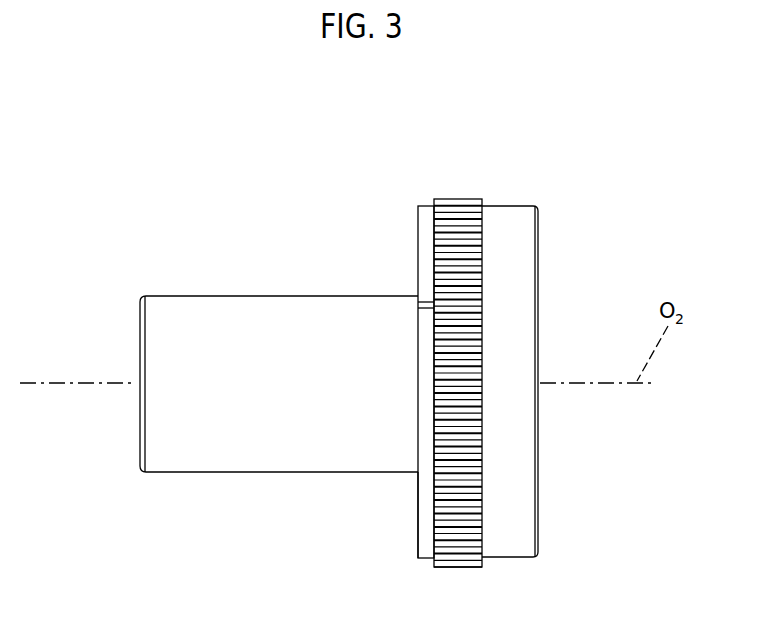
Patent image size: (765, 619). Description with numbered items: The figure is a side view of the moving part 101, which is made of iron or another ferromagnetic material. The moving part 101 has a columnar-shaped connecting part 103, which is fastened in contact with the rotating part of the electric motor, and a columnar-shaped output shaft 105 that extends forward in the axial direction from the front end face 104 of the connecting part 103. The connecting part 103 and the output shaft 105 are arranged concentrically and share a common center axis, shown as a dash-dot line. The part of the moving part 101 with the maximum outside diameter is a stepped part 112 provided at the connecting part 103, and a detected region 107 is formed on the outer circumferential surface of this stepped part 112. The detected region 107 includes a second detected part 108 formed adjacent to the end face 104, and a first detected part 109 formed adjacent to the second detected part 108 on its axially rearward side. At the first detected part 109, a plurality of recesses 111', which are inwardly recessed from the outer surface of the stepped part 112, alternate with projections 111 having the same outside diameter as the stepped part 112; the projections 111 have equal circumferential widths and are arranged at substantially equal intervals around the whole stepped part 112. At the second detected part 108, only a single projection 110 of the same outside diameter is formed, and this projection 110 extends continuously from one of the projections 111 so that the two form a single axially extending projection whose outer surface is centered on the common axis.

The moving part 101 is at (640, 211).
The connecting part 103 is at (532, 201).
The end face 104 is at (418, 519).
The output shaft 105 is at (279, 293).
The detected region 107 is at (493, 138).
The second detected part 108 is at (426, 202).
The first detected part 109 is at (457, 196).
The projection 110 is at (427, 302).
The projections 111 is at (543, 316).
The recesses 111' is at (545, 419).
The stepped part 112 is at (465, 571).